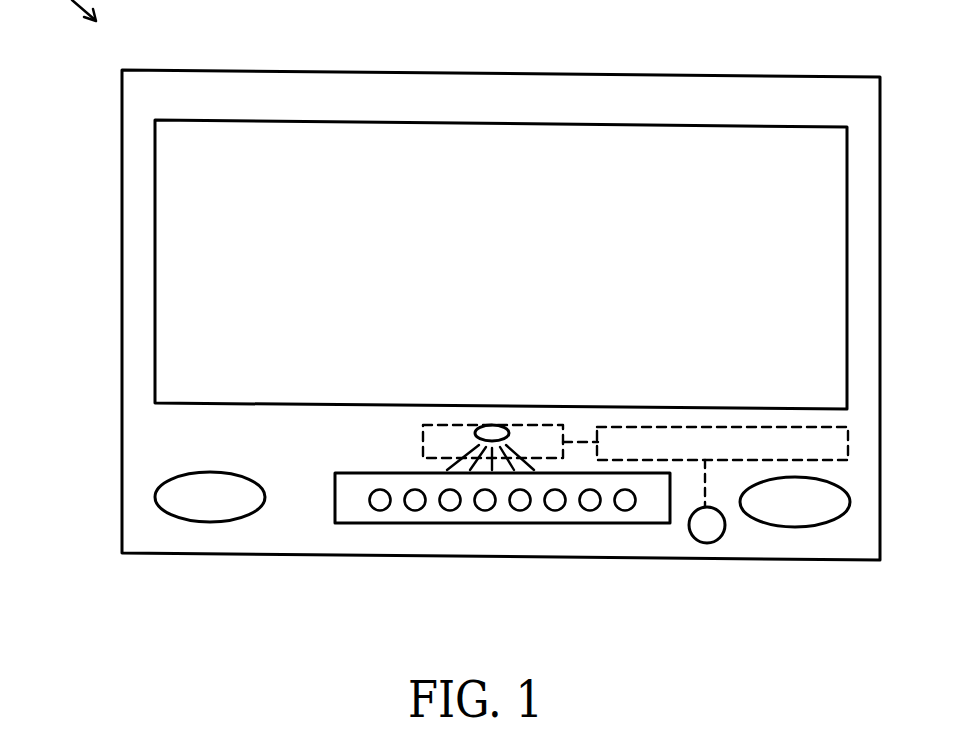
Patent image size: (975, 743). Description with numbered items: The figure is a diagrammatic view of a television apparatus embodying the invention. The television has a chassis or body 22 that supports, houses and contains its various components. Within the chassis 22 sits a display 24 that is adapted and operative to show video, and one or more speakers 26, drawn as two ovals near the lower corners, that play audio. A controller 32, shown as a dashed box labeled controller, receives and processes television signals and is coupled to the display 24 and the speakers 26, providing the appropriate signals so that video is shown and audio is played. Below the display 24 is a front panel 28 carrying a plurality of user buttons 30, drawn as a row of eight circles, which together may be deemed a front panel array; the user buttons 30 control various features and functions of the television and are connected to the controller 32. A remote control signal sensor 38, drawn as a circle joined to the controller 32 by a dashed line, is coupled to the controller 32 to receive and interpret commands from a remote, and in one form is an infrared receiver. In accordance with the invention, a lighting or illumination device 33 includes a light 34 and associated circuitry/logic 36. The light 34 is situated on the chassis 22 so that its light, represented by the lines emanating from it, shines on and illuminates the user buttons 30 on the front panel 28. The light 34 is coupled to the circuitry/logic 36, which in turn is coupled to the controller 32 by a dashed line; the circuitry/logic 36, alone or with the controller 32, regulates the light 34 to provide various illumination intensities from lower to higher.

The chassis 22 is at (259, 70).
The display 24 is at (312, 183).
The speakers 26 is at (206, 517).
The front panel 28 is at (376, 520).
The user buttons 30 is at (415, 508).
The controller 32 is at (634, 426).
The lighting device 33 is at (386, 429).
The light 34 is at (490, 424).
The circuitry/logic 36 is at (530, 425).
The remote control signal sensor 38 is at (712, 541).